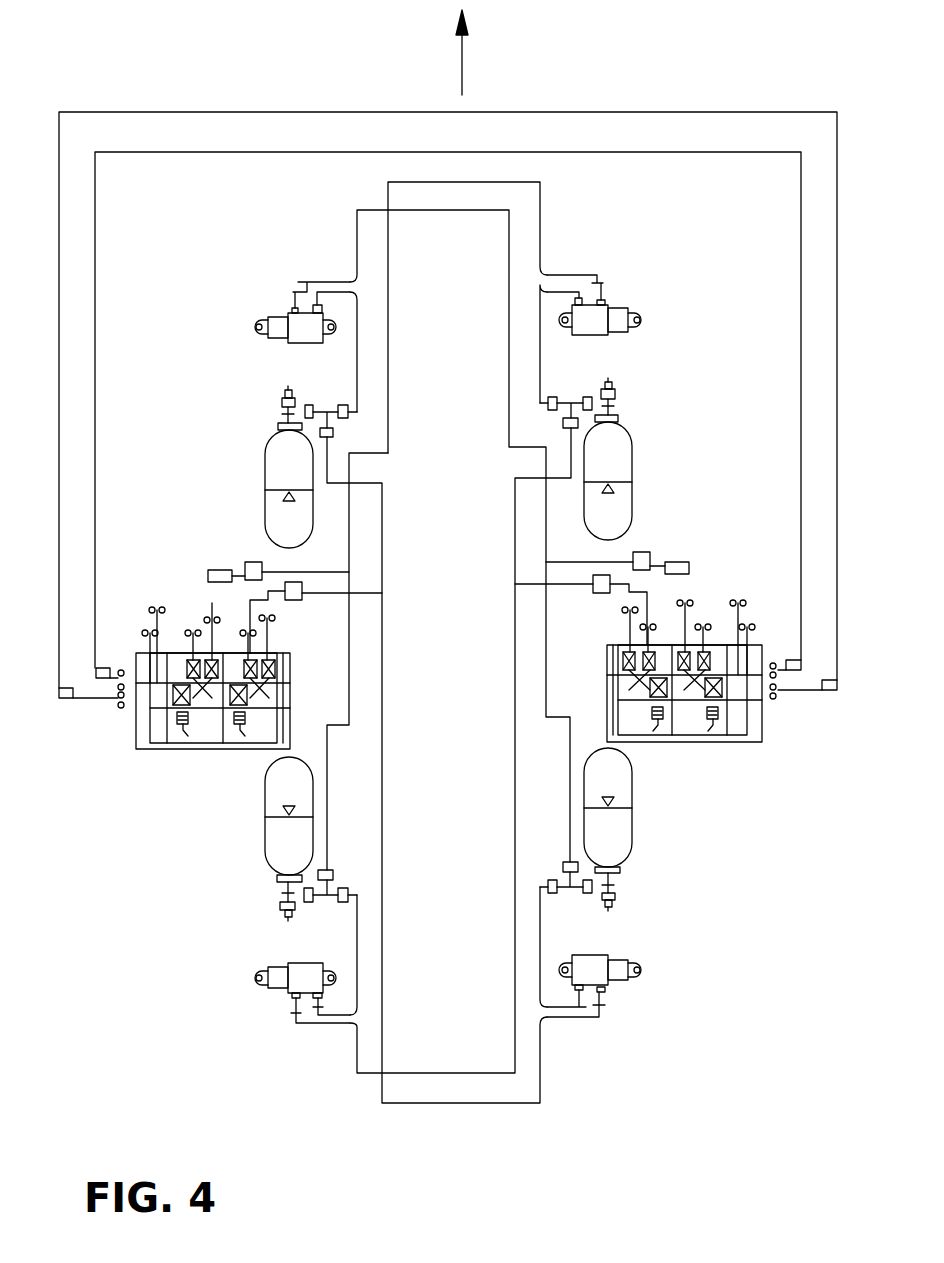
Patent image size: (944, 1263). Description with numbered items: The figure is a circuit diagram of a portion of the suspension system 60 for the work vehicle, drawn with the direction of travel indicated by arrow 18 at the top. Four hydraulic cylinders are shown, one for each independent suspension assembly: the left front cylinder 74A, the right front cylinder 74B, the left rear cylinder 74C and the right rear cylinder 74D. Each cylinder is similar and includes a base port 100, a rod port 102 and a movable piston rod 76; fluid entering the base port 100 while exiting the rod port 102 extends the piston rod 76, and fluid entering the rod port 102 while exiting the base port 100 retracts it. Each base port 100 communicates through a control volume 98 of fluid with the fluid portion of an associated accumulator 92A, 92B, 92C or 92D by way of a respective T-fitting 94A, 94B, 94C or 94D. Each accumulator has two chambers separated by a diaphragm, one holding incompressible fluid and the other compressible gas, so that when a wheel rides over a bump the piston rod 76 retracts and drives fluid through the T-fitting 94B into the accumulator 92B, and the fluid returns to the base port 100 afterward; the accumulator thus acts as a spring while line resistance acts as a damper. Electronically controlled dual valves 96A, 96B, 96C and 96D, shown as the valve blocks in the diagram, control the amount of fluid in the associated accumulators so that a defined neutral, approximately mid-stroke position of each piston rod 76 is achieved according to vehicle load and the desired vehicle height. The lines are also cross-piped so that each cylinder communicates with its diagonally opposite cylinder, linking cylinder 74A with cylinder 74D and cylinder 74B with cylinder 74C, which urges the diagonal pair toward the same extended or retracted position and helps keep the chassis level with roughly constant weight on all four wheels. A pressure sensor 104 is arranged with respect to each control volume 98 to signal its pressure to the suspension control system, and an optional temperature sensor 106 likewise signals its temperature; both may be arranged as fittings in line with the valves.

The direction of travel arrow 18 is at (462, 60).
The suspension system 60 is at (308, 1055).
The left front cylinder 74A is at (283, 315).
The right front cylinder 74B is at (623, 332).
The left rear cylinder 74C is at (290, 965).
The right rear cylinder 74D is at (590, 958).
The piston rod 76 is at (277, 337).
The accumulator 92A is at (267, 502).
The accumulator 92B is at (632, 515).
The accumulator 92C is at (264, 828).
The accumulator 92D is at (632, 818).
The T-fitting 94A is at (352, 432).
The T-fitting 94B is at (535, 417).
The T-fitting 94C is at (350, 860).
The T-fitting 94D is at (550, 858).
The electronically controlled dual valve 96A is at (301, 616).
The electronically controlled dual valve 96B is at (605, 627).
The electronically controlled dual valve 96C is at (173, 588).
The electronically controlled dual valve 96D is at (716, 578).
The control volume 98 is at (277, 450).
The base port 100 is at (327, 303).
The rod port 102 is at (292, 306).
The pressure sensor 104 is at (262, 563).
The temperature sensor 106 is at (245, 567).